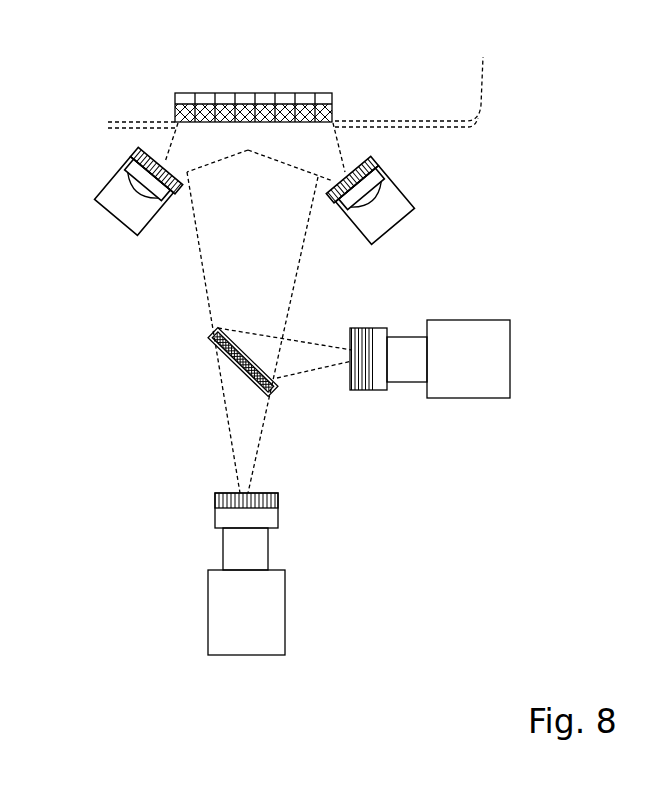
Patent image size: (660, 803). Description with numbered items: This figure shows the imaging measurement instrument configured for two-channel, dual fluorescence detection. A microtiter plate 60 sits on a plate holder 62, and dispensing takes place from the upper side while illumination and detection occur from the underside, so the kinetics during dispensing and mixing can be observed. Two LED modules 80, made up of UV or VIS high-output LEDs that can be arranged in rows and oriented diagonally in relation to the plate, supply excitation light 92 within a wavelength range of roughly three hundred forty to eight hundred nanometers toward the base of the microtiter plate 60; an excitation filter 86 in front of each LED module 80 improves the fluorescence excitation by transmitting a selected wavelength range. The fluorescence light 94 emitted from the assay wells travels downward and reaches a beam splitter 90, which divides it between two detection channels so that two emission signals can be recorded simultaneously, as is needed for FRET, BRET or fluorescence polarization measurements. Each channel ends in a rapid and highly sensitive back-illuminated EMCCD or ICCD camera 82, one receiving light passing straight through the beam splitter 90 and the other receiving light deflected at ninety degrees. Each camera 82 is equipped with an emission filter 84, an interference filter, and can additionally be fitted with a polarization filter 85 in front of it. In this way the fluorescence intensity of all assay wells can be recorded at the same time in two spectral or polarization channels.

The microtiter plate 60 is at (226, 93).
The plate holder 62 is at (304, 78).
The LED module 80 is at (112, 215).
The camera 82 is at (475, 356).
The emission filter 84 is at (377, 375).
The polarization filter 85 is at (337, 206).
The excitation filter 86 is at (372, 170).
The beam splitter 90 is at (235, 362).
The excitation light 92 is at (300, 148).
The fluorescence light 94 is at (233, 257).